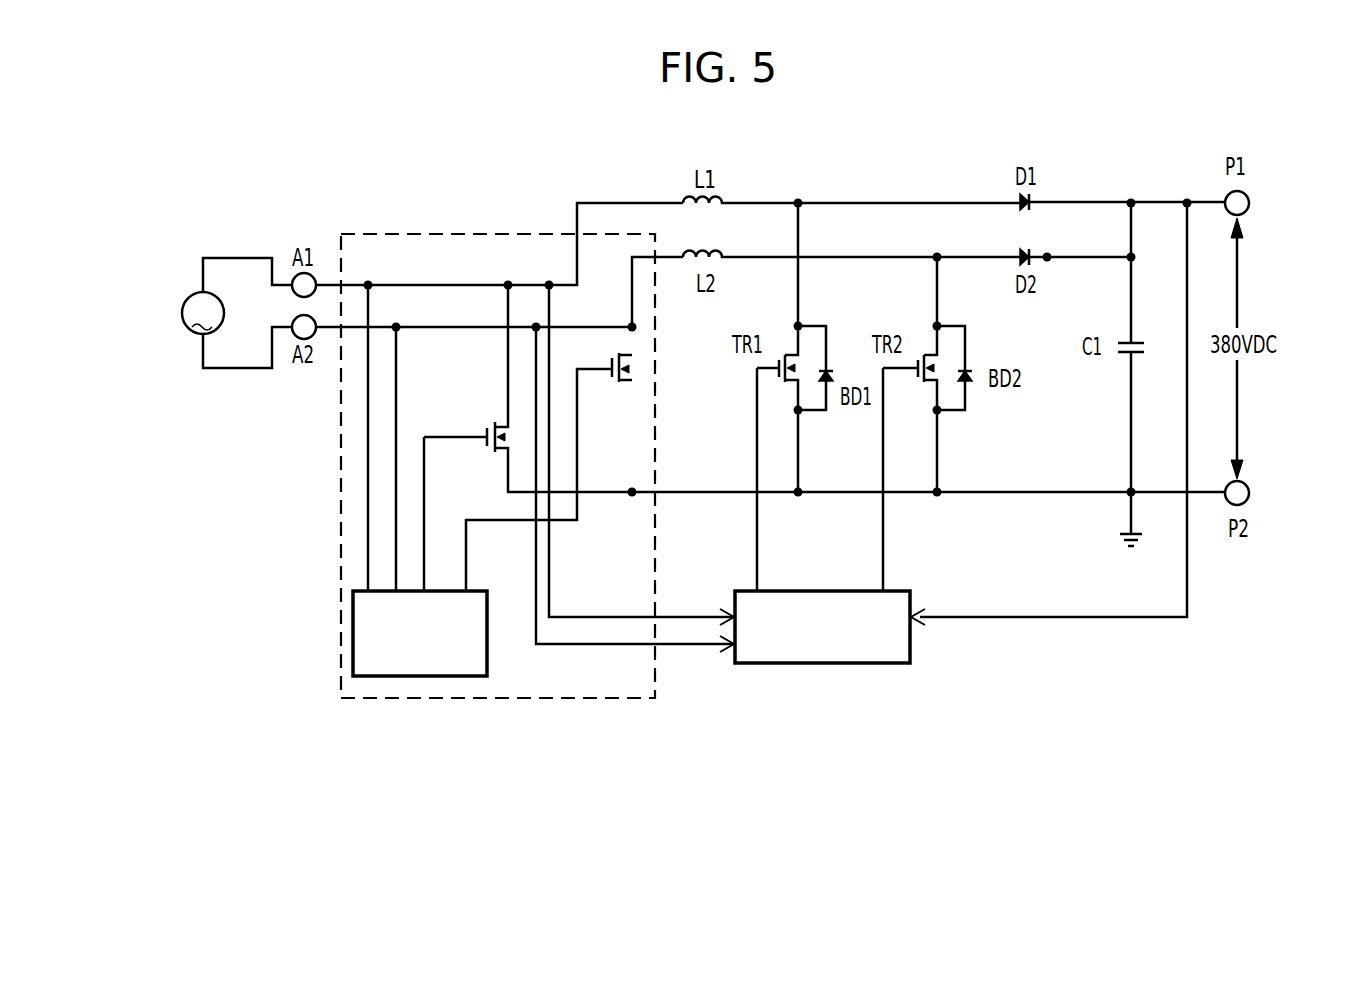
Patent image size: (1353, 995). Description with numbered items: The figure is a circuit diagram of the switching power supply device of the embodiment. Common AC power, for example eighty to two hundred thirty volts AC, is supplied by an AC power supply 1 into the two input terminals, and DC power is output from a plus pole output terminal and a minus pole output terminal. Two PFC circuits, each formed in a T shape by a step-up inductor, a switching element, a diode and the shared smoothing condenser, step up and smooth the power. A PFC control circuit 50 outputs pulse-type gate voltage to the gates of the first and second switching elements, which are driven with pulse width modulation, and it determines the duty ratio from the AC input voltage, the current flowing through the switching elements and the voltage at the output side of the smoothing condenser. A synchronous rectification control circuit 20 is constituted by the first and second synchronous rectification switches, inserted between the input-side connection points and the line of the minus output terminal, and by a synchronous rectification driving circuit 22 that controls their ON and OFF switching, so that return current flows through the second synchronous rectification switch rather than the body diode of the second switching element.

The AC power supply 1 is at (185, 332).
The synchronous rectification control circuit 20 is at (770, 493).
The synchronous rectification driving circuit 22 is at (408, 676).
The PFC control circuit 50 is at (833, 663).